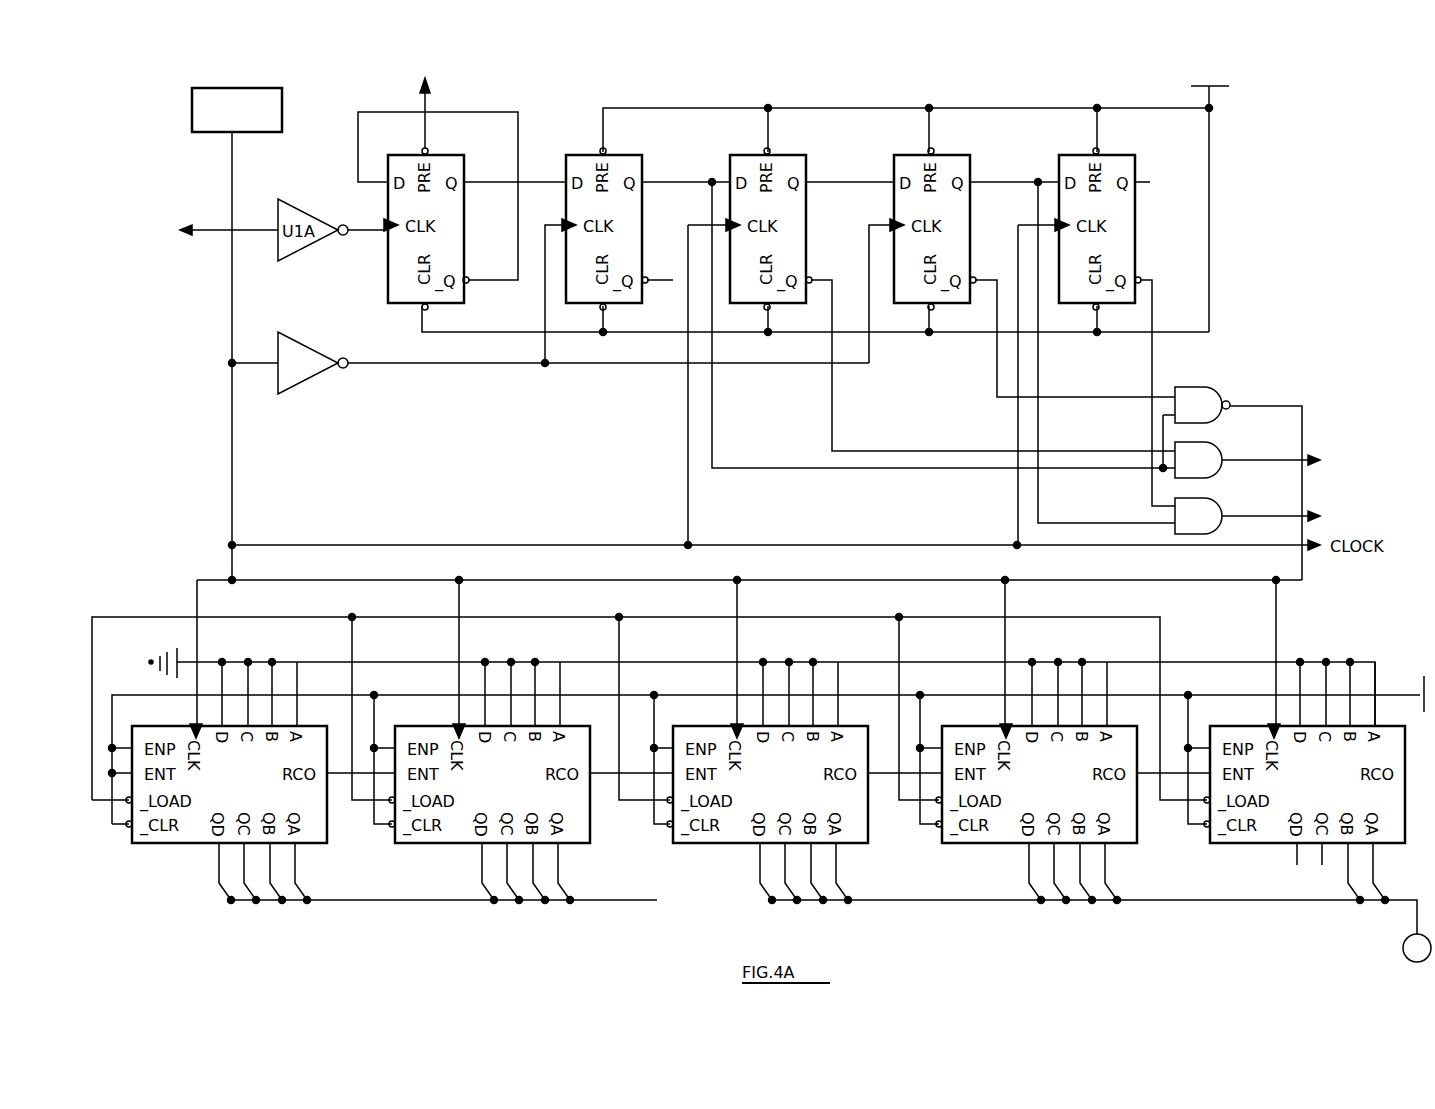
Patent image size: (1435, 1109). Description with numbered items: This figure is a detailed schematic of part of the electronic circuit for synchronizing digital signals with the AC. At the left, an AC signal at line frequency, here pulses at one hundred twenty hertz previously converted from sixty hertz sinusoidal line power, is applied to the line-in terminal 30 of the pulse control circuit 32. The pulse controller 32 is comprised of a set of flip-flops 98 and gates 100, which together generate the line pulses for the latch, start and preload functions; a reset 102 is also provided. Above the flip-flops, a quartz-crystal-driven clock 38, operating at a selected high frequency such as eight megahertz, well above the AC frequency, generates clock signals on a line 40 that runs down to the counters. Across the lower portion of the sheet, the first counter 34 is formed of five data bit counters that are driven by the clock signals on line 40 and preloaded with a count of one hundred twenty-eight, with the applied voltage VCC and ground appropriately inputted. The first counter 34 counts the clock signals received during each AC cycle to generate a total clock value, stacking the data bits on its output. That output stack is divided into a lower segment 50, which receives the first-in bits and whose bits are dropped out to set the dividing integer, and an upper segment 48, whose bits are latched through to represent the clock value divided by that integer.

The clock 38 is at (192, 108).
The line-in terminal 30 is at (188, 225).
The line 40 is at (232, 498).
The set of flip-flops 98 is at (365, 321).
The pulse control circuit 32 is at (456, 426).
The reset 102 is at (430, 90).
The gates 100 is at (1216, 380).
The first counter 34 is at (175, 592).
The lower segment 50 is at (613, 900).
The upper segment 48 is at (1235, 900).